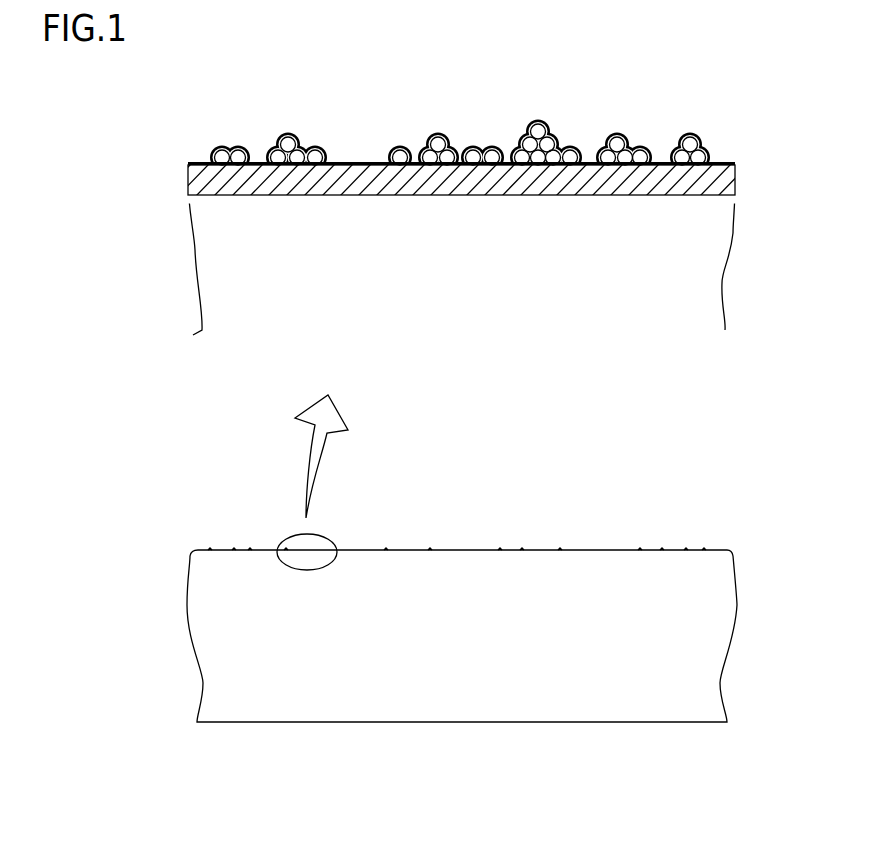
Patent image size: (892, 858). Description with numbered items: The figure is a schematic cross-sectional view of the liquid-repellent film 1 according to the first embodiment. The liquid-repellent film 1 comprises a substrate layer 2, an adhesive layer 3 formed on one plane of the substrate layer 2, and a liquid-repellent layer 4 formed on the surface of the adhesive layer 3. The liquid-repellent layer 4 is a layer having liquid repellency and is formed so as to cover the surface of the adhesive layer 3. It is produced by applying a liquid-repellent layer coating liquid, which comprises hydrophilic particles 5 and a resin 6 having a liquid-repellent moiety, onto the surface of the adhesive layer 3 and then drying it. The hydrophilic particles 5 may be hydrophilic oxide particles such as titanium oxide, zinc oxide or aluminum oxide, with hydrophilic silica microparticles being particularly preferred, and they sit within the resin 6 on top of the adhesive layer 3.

The liquid-repellent film 1 is at (577, 528).
The substrate layer 2 is at (703, 263).
The adhesive layer 3 is at (735, 180).
The liquid-repellent layer 4 is at (739, 117).
The hydrophilic particles 5 is at (558, 127).
The resin 6 is at (522, 125).